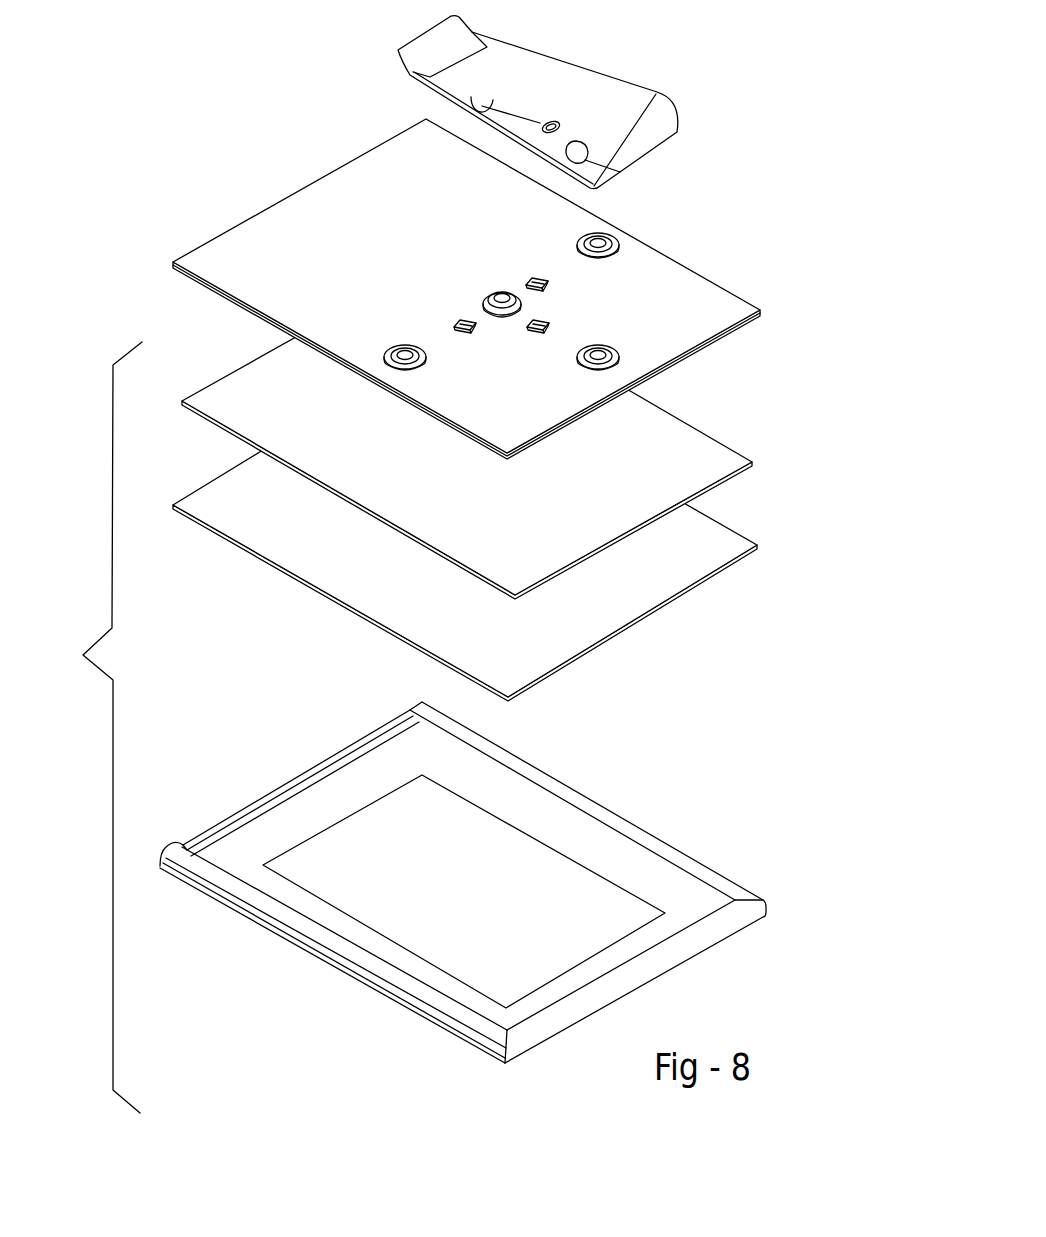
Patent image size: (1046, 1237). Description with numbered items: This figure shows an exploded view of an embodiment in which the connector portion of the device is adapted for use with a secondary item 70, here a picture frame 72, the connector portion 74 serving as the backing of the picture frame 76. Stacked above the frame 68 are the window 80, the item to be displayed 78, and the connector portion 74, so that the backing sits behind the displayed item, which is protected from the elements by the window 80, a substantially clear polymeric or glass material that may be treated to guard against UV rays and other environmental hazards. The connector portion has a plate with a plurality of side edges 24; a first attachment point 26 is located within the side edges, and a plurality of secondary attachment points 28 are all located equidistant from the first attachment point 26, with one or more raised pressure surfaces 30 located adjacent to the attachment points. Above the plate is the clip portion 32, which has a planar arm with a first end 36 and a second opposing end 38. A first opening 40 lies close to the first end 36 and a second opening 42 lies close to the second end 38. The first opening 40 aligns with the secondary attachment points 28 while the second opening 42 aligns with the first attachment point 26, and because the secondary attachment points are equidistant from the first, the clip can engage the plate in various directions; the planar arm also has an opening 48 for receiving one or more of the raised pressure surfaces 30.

The side edges 24 is at (477, 289).
The first attachment point 26 is at (496, 292).
The secondary attachment points 28 is at (402, 346).
The raised pressure surfaces 30 is at (533, 275).
The clip portion 32 is at (543, 115).
The first end 36 is at (600, 190).
The second opposing end 38 is at (427, 78).
The first opening 40 is at (574, 147).
The second opening 42 is at (490, 104).
The opening 48 is at (544, 128).
The frame 68 is at (313, 952).
The secondary item 70 is at (84, 727).
The picture frame 72 is at (112, 727).
The connector portion 74 is at (489, 289).
The picture frame 76 is at (743, 327).
The item to be displayed 78 is at (330, 487).
The window 80 is at (320, 590).